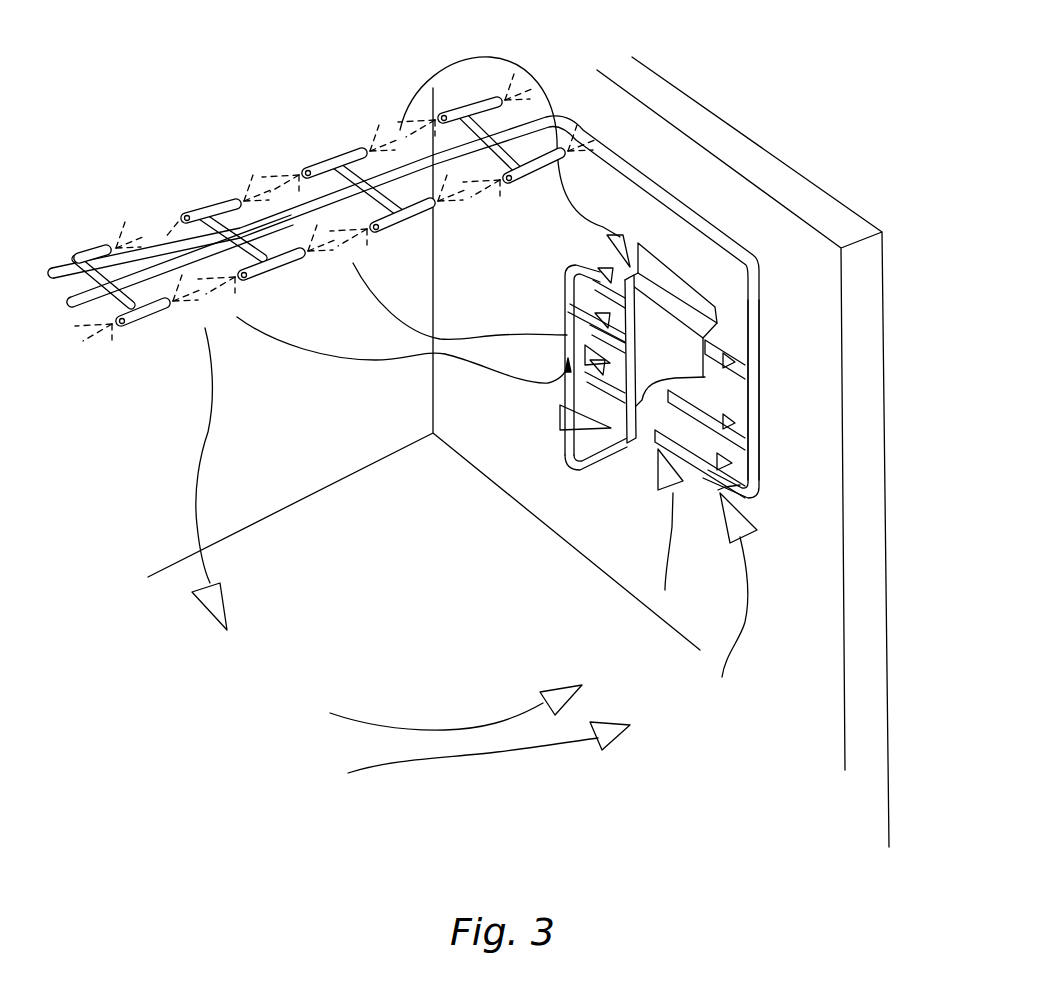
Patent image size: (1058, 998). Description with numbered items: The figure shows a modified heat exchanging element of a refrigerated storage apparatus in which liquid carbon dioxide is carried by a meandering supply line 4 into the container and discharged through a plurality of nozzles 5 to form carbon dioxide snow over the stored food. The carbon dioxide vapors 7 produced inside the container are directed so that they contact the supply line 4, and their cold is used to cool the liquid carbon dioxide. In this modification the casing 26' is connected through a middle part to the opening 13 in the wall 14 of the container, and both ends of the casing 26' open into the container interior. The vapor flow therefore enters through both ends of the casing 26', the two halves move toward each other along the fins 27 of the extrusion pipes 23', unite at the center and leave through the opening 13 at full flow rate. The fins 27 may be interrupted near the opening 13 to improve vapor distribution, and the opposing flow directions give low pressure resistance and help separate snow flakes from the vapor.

The meandering line 4 is at (567, 440).
The nozzles 5 is at (222, 203).
The carbon dioxide vapors 7 is at (747, 617).
The opening 13 is at (643, 433).
The wall 14 is at (687, 120).
The extrusion pipes 23' is at (780, 336).
The casing 26' is at (713, 251).
The fins 27 is at (748, 373).